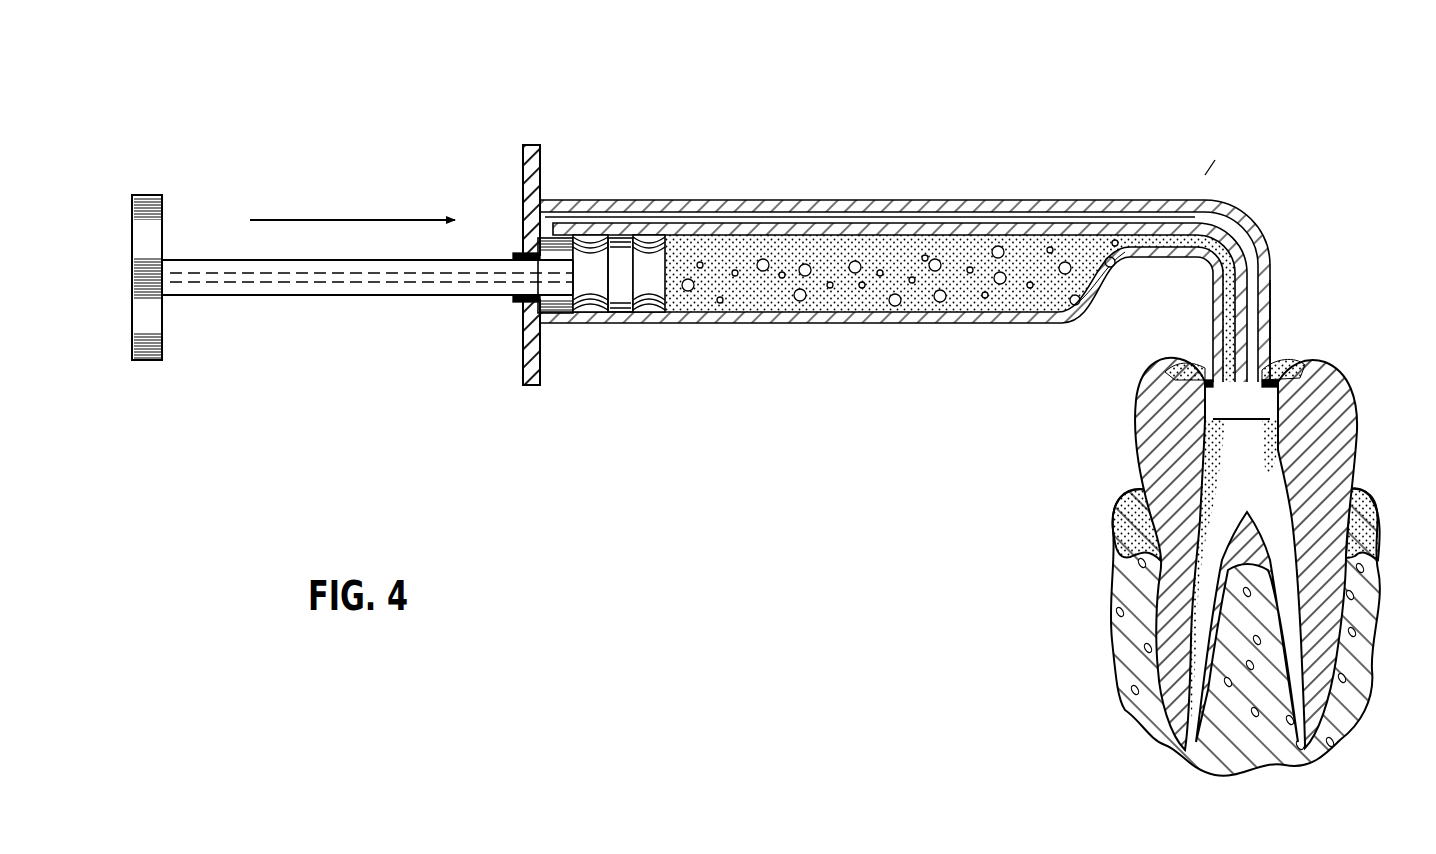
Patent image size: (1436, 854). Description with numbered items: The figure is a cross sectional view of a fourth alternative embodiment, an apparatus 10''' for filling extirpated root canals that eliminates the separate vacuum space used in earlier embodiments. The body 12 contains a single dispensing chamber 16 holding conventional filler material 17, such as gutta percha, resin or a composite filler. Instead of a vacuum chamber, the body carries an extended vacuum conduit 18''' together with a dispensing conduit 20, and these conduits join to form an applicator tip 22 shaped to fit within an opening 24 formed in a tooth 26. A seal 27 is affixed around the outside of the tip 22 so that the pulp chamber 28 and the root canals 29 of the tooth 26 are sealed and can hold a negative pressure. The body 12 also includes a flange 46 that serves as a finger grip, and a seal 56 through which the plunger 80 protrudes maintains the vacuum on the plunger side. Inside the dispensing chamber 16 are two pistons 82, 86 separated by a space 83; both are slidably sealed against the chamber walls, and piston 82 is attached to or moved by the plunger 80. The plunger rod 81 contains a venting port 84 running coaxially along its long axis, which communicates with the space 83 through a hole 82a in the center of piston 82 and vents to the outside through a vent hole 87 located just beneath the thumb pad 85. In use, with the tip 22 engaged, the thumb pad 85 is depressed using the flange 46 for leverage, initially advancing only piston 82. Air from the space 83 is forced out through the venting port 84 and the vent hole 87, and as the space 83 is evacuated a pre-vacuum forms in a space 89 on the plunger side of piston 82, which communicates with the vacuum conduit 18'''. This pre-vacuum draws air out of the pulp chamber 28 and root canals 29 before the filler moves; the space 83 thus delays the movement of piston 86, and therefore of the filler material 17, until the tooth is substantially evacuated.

The apparatus 10''' is at (1250, 141).
The body 12 is at (891, 199).
The dispensing chamber 16 is at (850, 302).
The filler material 17 is at (910, 305).
The extended vacuum conduit 18''' is at (949, 305).
The dispensing conduit 20 is at (1222, 340).
The applicator tip 22 is at (1273, 300).
The opening 24 is at (1242, 420).
The tooth 26 is at (1357, 399).
The seal 27 is at (1283, 372).
The pulp chamber 28 is at (1242, 473).
The root canals 29 is at (1300, 720).
The flange 46 is at (541, 162).
The seal 56 is at (514, 255).
The plunger 80 is at (425, 300).
The plunger rod 81 is at (318, 297).
The piston 82 is at (589, 246).
The hole 82a is at (581, 322).
The space 83 is at (622, 297).
The venting port 84 is at (373, 268).
The thumb pad 85 is at (130, 226).
The piston 86 is at (654, 288).
The vent hole 87 is at (166, 258).
The space 89 is at (558, 303).